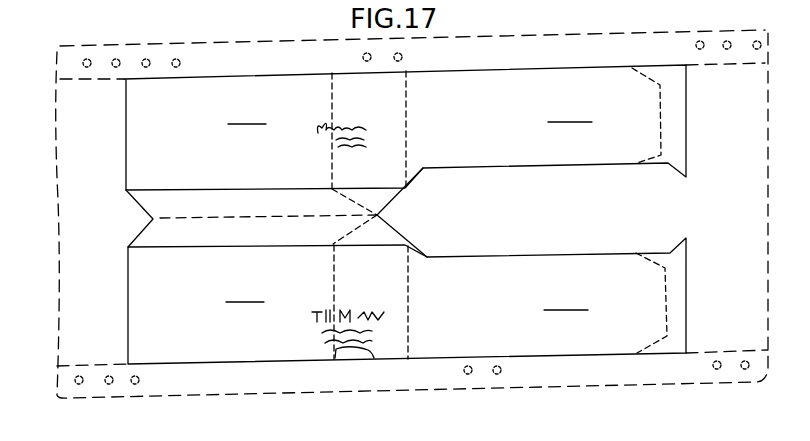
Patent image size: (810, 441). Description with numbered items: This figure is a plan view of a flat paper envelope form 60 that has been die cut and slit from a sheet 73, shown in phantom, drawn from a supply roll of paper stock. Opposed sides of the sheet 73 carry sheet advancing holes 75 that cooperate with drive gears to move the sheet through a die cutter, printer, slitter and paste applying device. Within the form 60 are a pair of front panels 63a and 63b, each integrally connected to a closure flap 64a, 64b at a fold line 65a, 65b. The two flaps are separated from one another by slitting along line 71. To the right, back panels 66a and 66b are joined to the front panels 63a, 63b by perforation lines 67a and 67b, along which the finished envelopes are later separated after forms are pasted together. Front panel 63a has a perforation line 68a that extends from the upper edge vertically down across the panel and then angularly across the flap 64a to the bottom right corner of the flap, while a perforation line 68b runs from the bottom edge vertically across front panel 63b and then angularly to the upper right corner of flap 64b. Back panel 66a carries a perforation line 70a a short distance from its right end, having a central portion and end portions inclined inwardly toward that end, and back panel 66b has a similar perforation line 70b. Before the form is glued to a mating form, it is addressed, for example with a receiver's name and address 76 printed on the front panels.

The envelope form 60 is at (118, 287).
The front panel 63a is at (247, 113).
The front panel 63b is at (245, 291).
The closure flap 64a is at (200, 200).
The closure flap 64b is at (193, 228).
The fold line 65a is at (297, 188).
The fold line 65b is at (310, 246).
The back panel 66a is at (570, 111).
The back panel 66b is at (566, 299).
The perforation line 67a is at (405, 124).
The perforation line 67b is at (408, 283).
The perforation line 68a is at (332, 103).
The perforation line 68b is at (338, 352).
The perforation line 70a is at (650, 150).
The perforation line 70b is at (663, 264).
The slitting line 71 is at (148, 228).
The sheet 73 is at (690, 372).
The sheet advancing holes 75 is at (755, 44).
The receiver's name and address 76 is at (318, 118).